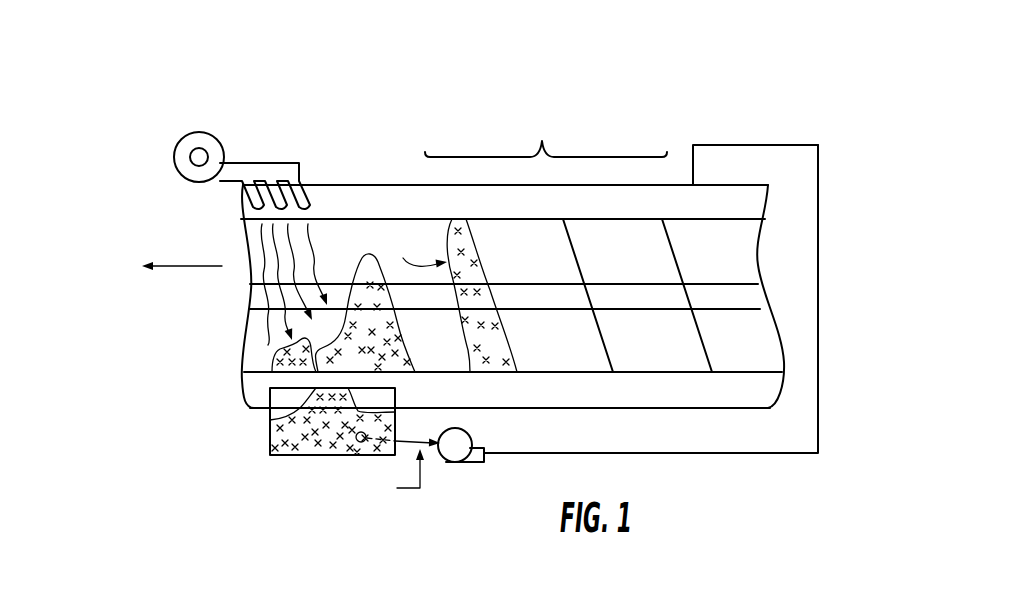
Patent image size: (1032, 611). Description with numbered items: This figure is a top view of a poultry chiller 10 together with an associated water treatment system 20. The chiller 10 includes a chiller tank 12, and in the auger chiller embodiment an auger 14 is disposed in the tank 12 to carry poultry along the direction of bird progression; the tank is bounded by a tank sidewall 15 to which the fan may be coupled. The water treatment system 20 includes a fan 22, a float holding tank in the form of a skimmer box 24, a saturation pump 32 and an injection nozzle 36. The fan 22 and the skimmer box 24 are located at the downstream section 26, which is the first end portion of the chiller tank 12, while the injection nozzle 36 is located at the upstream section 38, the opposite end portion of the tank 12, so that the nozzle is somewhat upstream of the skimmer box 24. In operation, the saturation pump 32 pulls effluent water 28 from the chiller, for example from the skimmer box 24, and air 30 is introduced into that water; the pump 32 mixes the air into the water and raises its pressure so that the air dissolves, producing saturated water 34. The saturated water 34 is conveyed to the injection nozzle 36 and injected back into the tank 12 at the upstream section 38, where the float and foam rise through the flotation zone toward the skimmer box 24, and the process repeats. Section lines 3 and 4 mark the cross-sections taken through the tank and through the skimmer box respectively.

The poultry chiller 10 is at (407, 148).
The chiller tank 12 is at (365, 185).
The auger 14 is at (678, 258).
The tank sidewall 15 is at (390, 185).
The water treatment system 20 is at (110, 338).
The fan 22 is at (170, 122).
The skimmer box 24 is at (265, 477).
The downstream section 26 is at (294, 50).
The effluent water 28 is at (413, 441).
The air 30 is at (421, 478).
The saturation pump 32 is at (461, 478).
The saturated water 34 is at (818, 345).
The injection nozzle 36 is at (692, 176).
The upstream section 38 is at (728, 45).
The section line 3 is at (675, 128).
The section line 4 is at (267, 148).